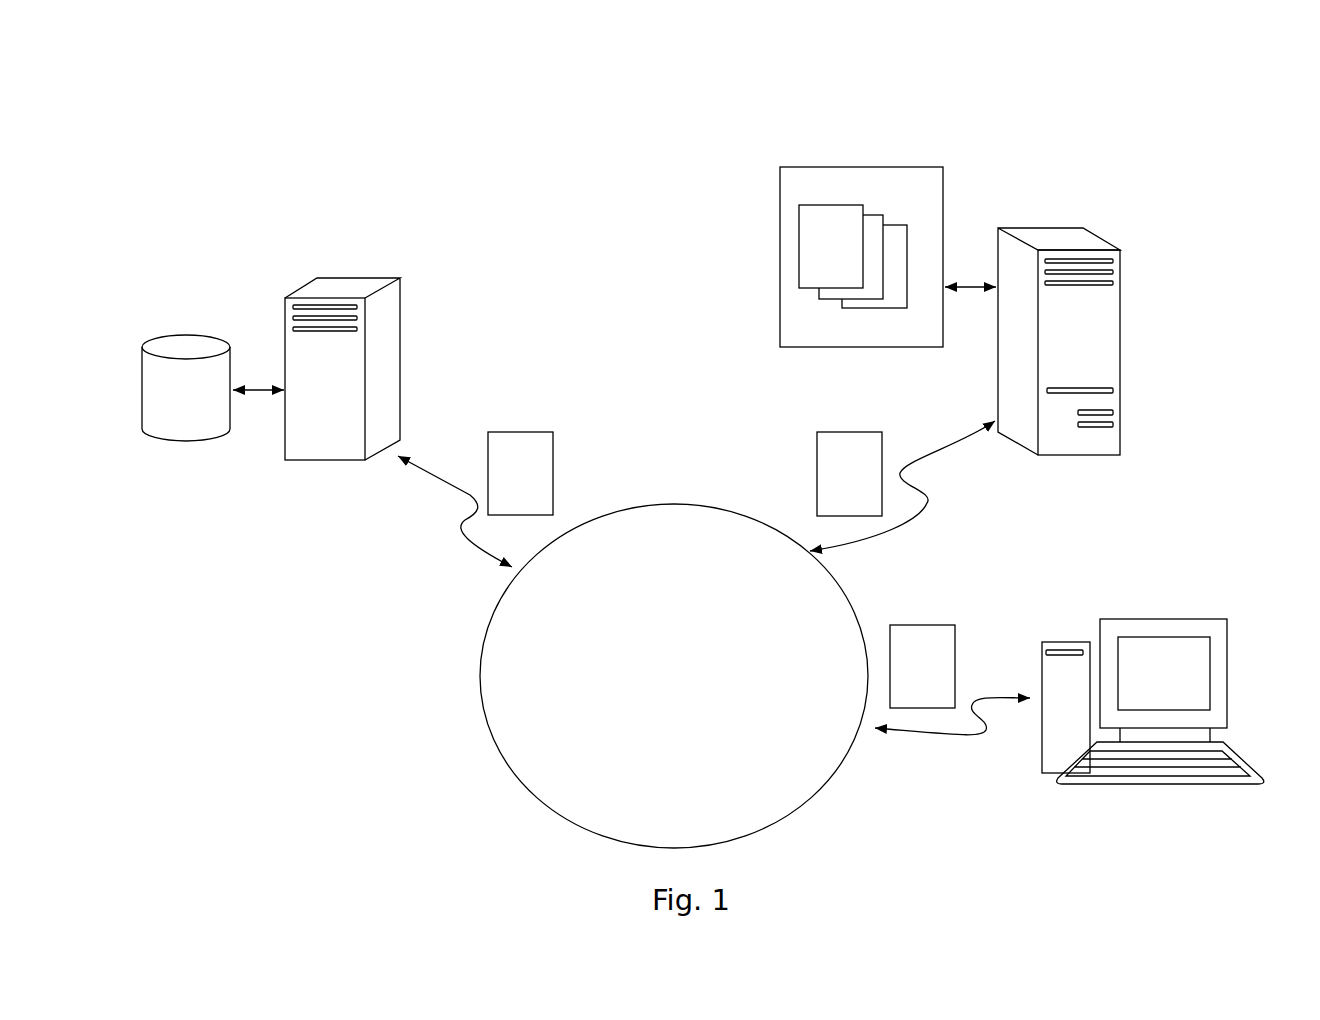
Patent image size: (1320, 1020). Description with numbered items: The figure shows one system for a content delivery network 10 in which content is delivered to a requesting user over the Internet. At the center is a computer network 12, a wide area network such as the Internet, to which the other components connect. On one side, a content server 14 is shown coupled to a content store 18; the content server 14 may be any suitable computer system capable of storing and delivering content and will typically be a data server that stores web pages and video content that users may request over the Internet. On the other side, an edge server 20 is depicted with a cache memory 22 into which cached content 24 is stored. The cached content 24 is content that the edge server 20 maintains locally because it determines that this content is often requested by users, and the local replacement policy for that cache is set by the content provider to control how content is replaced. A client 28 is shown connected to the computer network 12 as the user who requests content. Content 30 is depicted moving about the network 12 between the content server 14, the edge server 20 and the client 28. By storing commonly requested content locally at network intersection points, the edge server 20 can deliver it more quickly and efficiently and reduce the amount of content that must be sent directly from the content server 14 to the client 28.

The content delivery network 10 is at (1182, 108).
The computer network 12 is at (542, 800).
The content server 14 is at (401, 316).
The content store 18 is at (142, 419).
The edge server 20 is at (1123, 280).
The cache memory 22 is at (831, 228).
The cached content 24 is at (799, 252).
The client 28 is at (1207, 618).
The content 30 is at (554, 456).